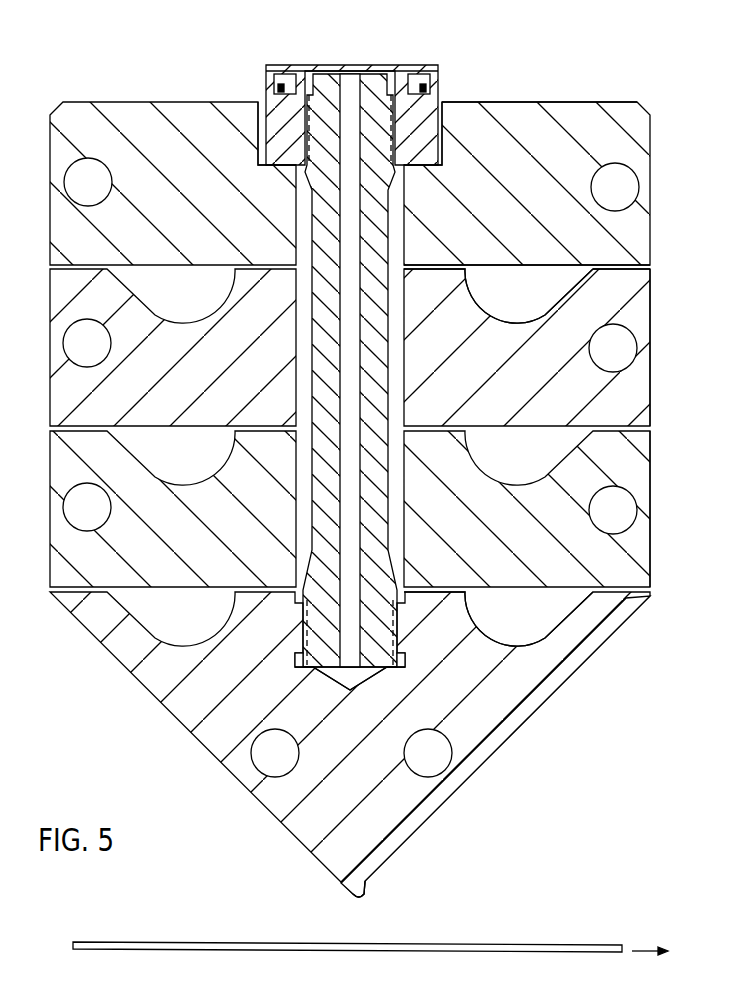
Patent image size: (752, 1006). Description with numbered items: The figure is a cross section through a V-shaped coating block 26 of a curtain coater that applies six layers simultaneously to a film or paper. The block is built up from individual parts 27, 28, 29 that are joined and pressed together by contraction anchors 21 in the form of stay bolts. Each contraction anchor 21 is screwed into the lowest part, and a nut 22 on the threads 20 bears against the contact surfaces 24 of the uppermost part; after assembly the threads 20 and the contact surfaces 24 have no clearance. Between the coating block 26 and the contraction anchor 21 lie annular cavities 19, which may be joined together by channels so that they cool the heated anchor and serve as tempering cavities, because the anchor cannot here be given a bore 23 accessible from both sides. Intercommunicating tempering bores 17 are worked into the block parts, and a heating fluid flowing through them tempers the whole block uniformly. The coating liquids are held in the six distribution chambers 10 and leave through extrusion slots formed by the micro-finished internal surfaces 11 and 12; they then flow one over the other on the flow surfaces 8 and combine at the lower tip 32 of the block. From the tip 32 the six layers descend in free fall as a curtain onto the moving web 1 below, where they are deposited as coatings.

The moving web 1 is at (508, 949).
The flow surfaces 8 is at (652, 400).
The distribution chambers 10 is at (530, 282).
The internal surface 11 is at (632, 262).
The internal surface 12 is at (633, 274).
The tempering bores 17 is at (625, 178).
The annular cavities 19 is at (400, 228).
The threads 20 is at (397, 625).
The contraction anchor 21 is at (323, 92).
The nut 22 is at (410, 85).
The bore 23 is at (348, 80).
The contact surfaces 24 is at (437, 103).
The coating block 26 is at (119, 90).
The part 27 is at (620, 136).
The part 28 is at (638, 377).
The part 29 is at (520, 695).
The lower tip 32 is at (362, 898).